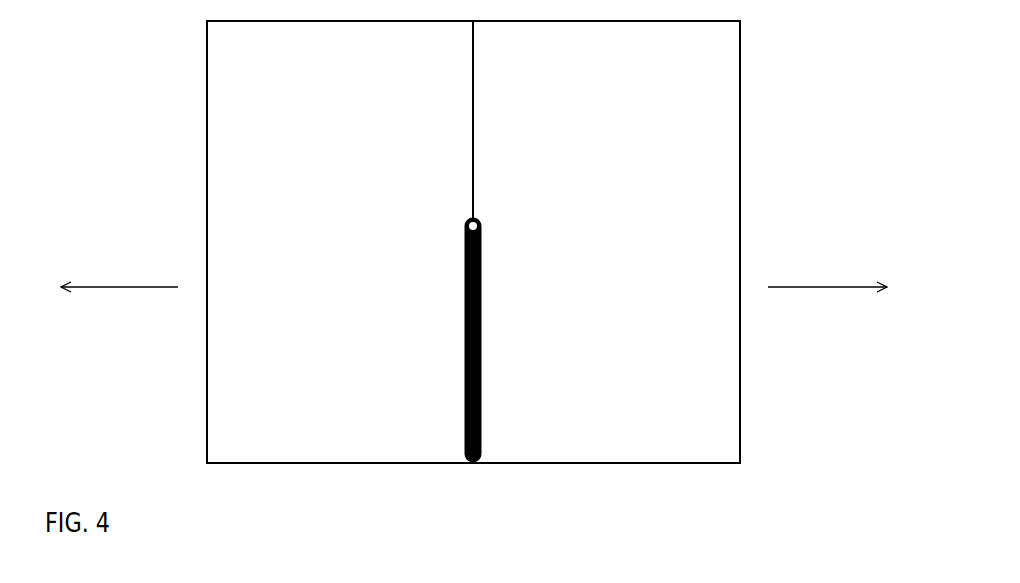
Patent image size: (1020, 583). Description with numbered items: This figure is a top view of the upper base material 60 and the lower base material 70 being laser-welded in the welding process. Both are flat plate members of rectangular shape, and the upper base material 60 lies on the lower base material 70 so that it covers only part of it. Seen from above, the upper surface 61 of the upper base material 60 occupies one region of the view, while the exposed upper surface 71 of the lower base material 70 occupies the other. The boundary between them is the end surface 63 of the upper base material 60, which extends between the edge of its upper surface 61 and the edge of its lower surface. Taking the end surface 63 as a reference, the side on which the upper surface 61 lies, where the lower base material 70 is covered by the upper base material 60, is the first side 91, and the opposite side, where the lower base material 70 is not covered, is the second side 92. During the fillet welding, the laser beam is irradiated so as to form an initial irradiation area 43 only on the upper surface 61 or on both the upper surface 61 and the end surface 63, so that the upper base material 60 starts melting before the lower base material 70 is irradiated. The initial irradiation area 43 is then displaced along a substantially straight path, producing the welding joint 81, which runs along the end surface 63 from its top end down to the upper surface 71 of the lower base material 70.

The upper base material 60 is at (764, 139).
The lower base material 70 is at (202, 168).
The upper surface of the lower base material 71 is at (345, 133).
The upper surface of the upper base material 61 is at (629, 143).
The end surface 63 is at (473, 173).
The initial irradiation area 43 is at (480, 223).
The welding joint 81 is at (482, 285).
The second side 92 is at (138, 285).
The first side 91 is at (820, 285).